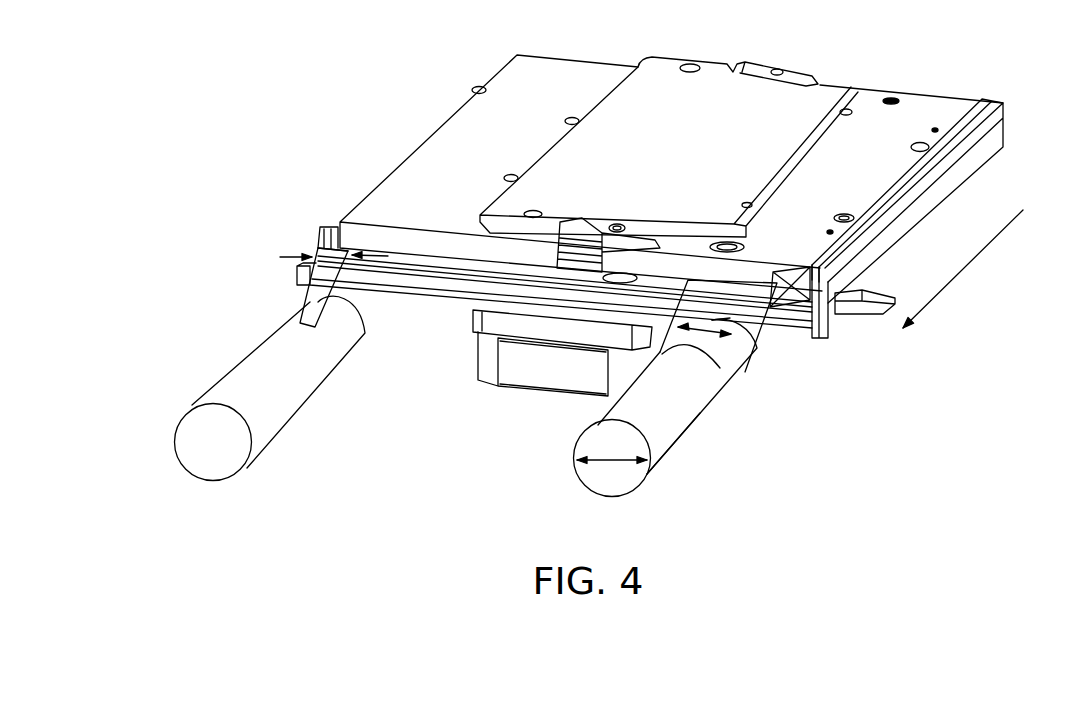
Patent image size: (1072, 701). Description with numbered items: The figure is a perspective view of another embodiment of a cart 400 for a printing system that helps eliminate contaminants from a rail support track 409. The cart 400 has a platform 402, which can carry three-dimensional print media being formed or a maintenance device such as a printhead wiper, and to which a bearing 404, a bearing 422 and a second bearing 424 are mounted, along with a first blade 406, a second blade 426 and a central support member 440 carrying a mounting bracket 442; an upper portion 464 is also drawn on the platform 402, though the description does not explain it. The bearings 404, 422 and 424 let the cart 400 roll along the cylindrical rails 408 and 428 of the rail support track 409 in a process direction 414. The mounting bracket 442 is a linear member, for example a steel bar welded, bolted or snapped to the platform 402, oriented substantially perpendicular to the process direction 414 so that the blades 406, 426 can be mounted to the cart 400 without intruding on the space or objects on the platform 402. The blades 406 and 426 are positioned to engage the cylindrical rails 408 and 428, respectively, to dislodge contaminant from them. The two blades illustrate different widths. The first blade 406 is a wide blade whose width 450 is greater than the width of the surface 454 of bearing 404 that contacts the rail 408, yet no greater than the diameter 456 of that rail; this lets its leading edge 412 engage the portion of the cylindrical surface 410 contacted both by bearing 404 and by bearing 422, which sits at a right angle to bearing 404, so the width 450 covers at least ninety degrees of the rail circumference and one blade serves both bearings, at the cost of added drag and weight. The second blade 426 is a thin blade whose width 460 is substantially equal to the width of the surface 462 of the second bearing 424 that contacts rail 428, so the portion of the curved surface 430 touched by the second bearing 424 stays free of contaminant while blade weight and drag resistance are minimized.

The cart 400 is at (878, 440).
The platform 402 is at (444, 141).
The bearing 404 is at (836, 317).
The first blade 406 is at (735, 372).
The cylindrical rail 408 is at (658, 465).
The rail support track 409 is at (358, 456).
The cylindrical surface 410 is at (675, 380).
The leading edge 412 is at (722, 378).
The process direction 414 is at (978, 258).
The bearing 422 is at (660, 283).
The second bearing 424 is at (320, 228).
The second blade 426 is at (305, 305).
The cylindrical rail 428 is at (255, 352).
The curved surface 430 is at (243, 392).
The central support member 440 is at (490, 375).
The mounting bracket 442 is at (472, 297).
The width 450 is at (755, 340).
The surface 454 is at (828, 275).
The diameter 456 is at (610, 462).
The width 460 is at (293, 254).
The surface 462 is at (333, 228).
The upper platform 464 is at (640, 70).